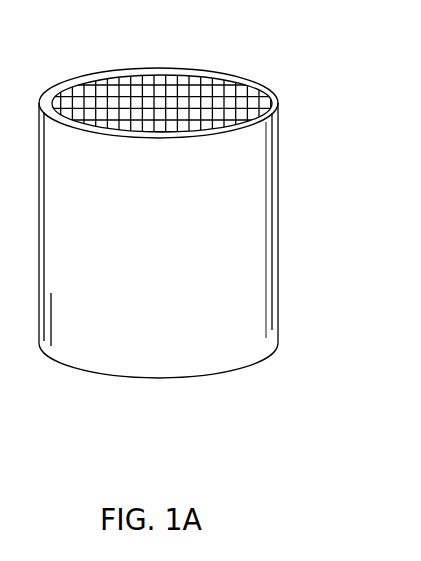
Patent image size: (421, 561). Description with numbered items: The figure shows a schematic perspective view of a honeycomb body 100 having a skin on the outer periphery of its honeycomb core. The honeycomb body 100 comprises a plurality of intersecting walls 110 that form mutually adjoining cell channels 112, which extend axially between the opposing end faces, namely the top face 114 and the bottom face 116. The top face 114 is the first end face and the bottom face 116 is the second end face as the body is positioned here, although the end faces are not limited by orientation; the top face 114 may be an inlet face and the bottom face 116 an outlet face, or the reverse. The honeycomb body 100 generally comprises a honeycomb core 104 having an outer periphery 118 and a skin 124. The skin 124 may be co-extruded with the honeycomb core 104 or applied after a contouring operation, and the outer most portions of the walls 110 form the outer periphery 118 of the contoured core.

The honeycomb body 100 is at (188, 228).
The honeycomb core 104 is at (169, 80).
The intersecting walls 110 is at (166, 102).
The cell channels 112 is at (183, 80).
The top face 114 is at (278, 97).
The bottom face 116 is at (148, 377).
The outer periphery 118 is at (56, 108).
The skin 124 is at (255, 177).